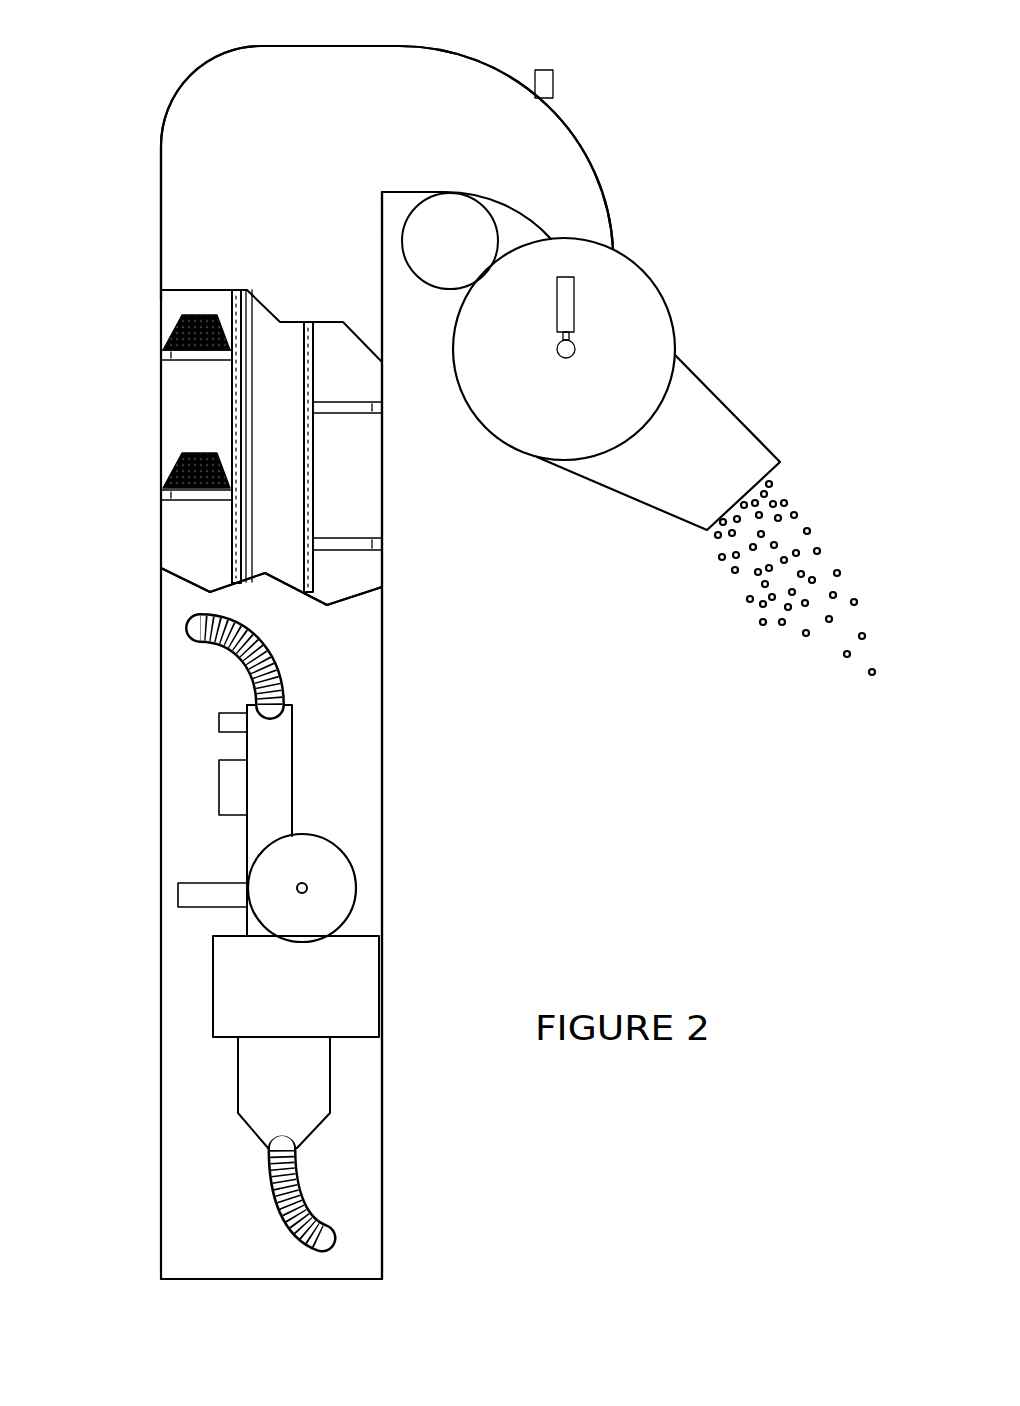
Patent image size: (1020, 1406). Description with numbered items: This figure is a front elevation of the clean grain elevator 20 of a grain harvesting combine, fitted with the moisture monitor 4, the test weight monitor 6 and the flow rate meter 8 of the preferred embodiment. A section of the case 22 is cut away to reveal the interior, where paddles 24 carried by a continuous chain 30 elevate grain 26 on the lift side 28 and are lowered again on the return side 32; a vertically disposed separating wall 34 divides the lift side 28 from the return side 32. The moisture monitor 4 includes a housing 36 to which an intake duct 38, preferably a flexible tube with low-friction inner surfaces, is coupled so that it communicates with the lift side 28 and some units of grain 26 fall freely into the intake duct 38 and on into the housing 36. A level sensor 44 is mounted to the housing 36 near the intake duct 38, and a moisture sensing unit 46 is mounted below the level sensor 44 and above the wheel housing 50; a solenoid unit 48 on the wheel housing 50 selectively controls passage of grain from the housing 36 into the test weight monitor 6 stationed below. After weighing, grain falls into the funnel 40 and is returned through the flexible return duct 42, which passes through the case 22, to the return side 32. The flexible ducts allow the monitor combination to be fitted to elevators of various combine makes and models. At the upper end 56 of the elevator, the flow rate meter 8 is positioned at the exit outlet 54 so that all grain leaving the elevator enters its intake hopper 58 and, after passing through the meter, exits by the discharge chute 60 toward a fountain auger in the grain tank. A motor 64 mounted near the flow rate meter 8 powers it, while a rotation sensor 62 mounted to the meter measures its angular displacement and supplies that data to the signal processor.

The moisture monitor 4 is at (243, 853).
The test weight monitor 6 is at (372, 987).
The flow rate meter 8 is at (675, 318).
The clean grain elevator 20 is at (382, 748).
The case 22 is at (362, 637).
The paddles 24 is at (172, 357).
The grain 26 is at (177, 463).
The lift side 28 is at (188, 547).
The continuous chain 30 is at (313, 490).
The return side 32 is at (353, 567).
The separating wall 34 is at (250, 433).
The housing 36 is at (287, 782).
The intake duct 38 is at (188, 628).
The funnel 40 is at (318, 1085).
The return duct 42 is at (325, 1213).
The level sensor 44 is at (218, 718).
The moisture sensing unit 46 is at (222, 785).
The solenoid unit 48 is at (185, 898).
The wheel housing 50 is at (332, 888).
The exit outlet 54 is at (492, 77).
The upper end 56 is at (202, 75).
The intake hopper 58 is at (595, 215).
The discharge chute 60 is at (740, 445).
The rotation sensor 62 is at (567, 298).
The motor 64 is at (462, 229).